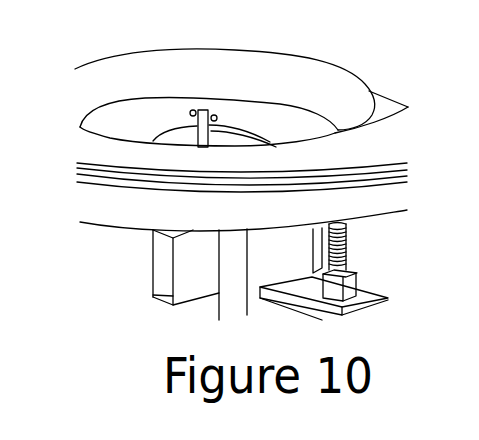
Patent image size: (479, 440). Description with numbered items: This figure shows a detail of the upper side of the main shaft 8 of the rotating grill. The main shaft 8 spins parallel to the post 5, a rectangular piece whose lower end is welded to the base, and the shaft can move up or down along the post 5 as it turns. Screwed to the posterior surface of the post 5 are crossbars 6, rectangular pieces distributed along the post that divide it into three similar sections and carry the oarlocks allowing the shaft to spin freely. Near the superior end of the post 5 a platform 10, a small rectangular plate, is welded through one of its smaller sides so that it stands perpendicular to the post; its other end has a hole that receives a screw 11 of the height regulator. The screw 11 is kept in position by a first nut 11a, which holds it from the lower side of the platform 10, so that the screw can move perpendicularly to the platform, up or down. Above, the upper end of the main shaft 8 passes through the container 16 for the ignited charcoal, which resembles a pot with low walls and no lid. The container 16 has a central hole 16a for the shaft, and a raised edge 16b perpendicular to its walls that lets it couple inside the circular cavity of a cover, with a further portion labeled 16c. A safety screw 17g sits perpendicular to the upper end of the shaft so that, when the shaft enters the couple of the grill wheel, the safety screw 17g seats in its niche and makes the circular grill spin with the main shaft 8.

The container 16 is at (130, 221).
The hole 16a is at (245, 137).
The raised edge 16b is at (270, 170).
The outer lip of ring 16c is at (111, 133).
The main shaft 8 is at (201, 108).
The safety screw 17g is at (222, 118).
The crossbars 6 is at (160, 278).
The post 5 is at (234, 262).
The platform 10 is at (297, 286).
The screw 11 is at (349, 248).
The first nut 11a is at (349, 280).